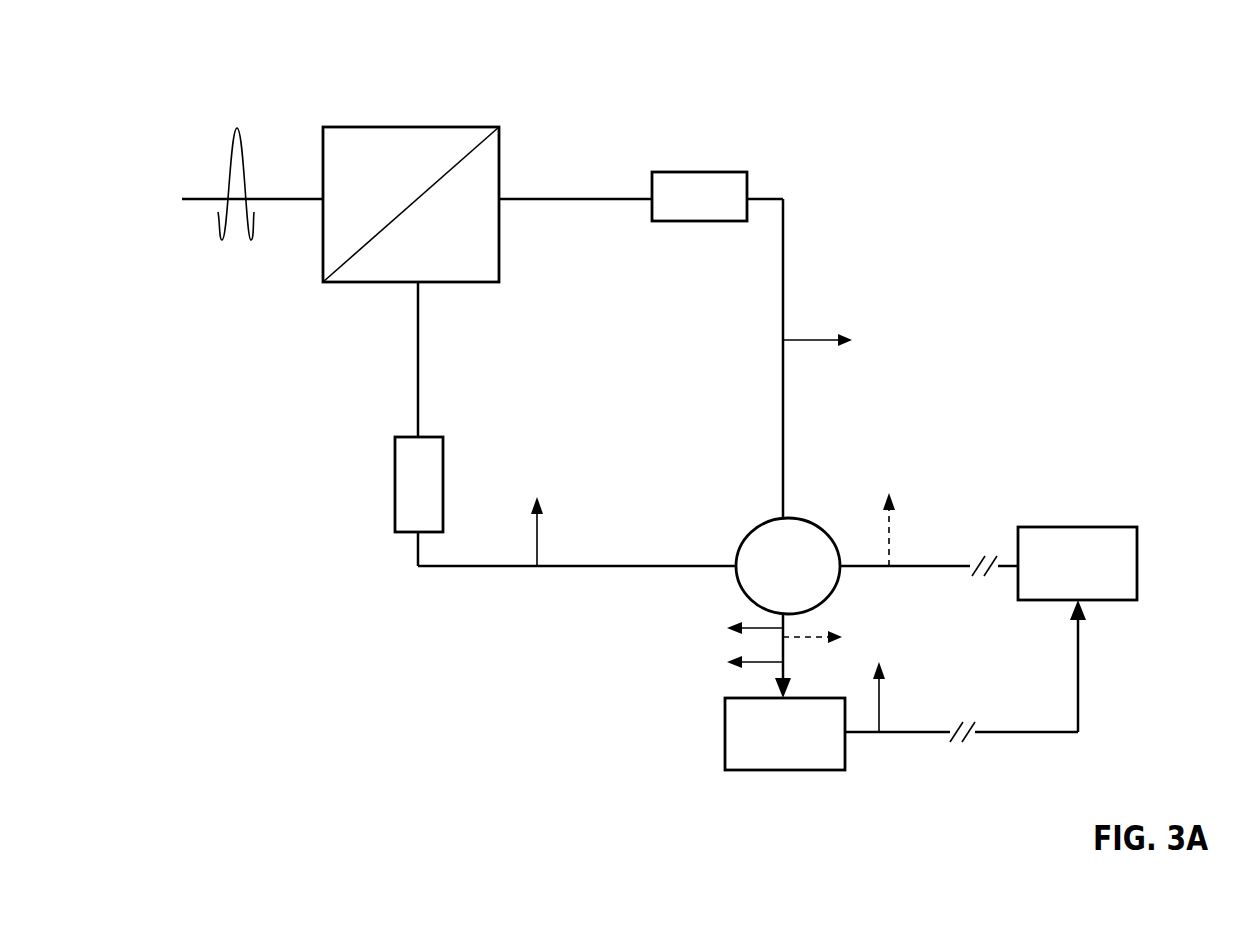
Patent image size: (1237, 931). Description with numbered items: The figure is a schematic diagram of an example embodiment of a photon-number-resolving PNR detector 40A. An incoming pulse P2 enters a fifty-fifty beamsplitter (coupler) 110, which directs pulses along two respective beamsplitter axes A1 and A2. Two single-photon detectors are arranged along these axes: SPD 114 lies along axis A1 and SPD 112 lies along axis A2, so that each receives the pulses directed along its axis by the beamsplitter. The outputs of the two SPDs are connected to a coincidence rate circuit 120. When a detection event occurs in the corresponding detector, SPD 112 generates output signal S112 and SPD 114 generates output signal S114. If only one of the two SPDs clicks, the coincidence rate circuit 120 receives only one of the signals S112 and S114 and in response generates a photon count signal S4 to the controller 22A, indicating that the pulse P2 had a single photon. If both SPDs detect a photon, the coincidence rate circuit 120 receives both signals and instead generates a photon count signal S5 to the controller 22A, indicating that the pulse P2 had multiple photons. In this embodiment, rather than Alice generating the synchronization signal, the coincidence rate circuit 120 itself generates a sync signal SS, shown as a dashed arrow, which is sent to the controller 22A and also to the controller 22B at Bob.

The PNR detector 40A is at (980, 151).
The pulse P2 is at (228, 162).
The beamsplitter 110 is at (393, 127).
The beamsplitter axis A1 is at (537, 199).
The beamsplitter axis A2 is at (418, 332).
The single-photon detector 114 is at (678, 211).
The output signal S114 is at (818, 337).
The single-photon detector 112 is at (395, 483).
The output signal S112 is at (537, 528).
The coincidence rate circuit 120 is at (767, 579).
The controller 22A is at (762, 753).
The controller 22B is at (1055, 583).
The photon count signal S4 is at (727, 630).
The photon count signal S5 is at (728, 665).
The sync signal SS is at (889, 537).